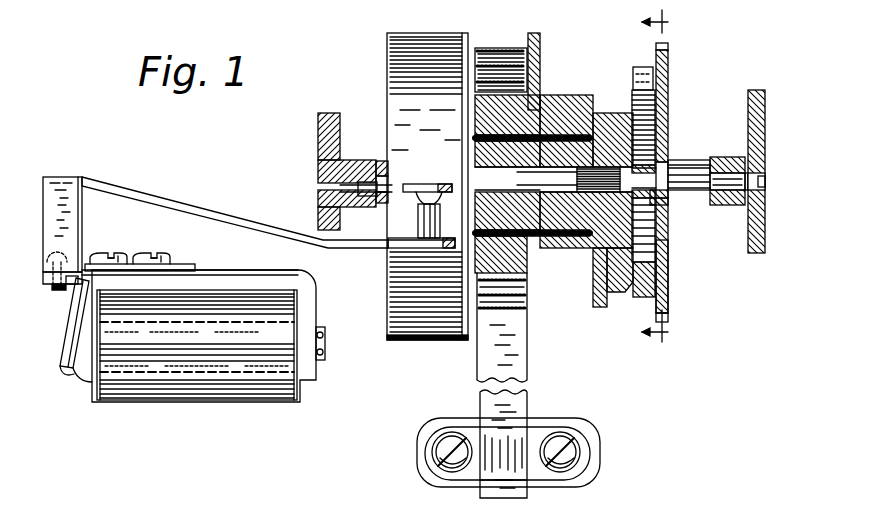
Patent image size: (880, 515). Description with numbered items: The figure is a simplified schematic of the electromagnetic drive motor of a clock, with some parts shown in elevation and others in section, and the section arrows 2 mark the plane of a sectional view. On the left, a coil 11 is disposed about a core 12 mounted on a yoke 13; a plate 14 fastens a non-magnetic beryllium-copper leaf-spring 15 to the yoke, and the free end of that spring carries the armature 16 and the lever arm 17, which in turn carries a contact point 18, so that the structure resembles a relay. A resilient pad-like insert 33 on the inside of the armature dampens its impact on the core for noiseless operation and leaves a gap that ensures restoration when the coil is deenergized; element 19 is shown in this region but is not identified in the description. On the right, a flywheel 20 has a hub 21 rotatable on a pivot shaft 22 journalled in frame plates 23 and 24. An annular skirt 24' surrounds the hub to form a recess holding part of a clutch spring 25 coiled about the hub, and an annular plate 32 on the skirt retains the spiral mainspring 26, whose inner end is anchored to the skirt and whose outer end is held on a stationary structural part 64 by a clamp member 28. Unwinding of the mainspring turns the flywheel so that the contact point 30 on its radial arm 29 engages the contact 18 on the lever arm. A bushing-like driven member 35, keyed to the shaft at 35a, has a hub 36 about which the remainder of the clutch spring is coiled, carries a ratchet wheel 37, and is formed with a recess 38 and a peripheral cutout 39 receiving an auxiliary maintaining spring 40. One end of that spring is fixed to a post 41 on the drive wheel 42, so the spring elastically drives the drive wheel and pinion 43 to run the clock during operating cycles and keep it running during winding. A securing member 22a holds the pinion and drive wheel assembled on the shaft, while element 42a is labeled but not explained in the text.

The section line 2- 2 is at (664, 177).
The coil 11 is at (163, 390).
The core 12 is at (87, 380).
The yoke 13 is at (315, 307).
The plate 14 is at (187, 250).
The leaf-spring 15 is at (200, 266).
The armature 16 is at (68, 322).
The lever arm 17 is at (75, 216).
The contact point 18 is at (403, 203).
The pivot 19 is at (72, 286).
The flywheel 20 is at (398, 62).
The hub 21 is at (522, 137).
The pivot shaft 22 is at (366, 183).
The securing member 22a is at (743, 157).
The frame plate 23 is at (318, 128).
The frame plate 24 is at (733, 187).
The annular skirt 24' is at (527, 90).
The clutch spring 25 is at (565, 237).
The mainspring 26 is at (493, 62).
The clamp member 28 is at (548, 480).
The arm 29 is at (408, 184).
The contact point 30 is at (433, 193).
The annular plate 32 is at (535, 52).
The resilient pad-like insert 33 is at (79, 373).
The driven member 35 is at (624, 288).
The key 35a is at (597, 155).
The hub 36 is at (563, 150).
The ratchet wheel 37 is at (593, 281).
The recess 38 is at (636, 278).
The peripheral cutout 39 is at (636, 72).
The auxiliary spring 40 is at (653, 118).
The post 41 is at (667, 77).
The drive wheel 42 is at (663, 258).
The disc flange 42a is at (668, 213).
The pinion 43 is at (688, 160).
The stationary structural part 64 is at (600, 452).